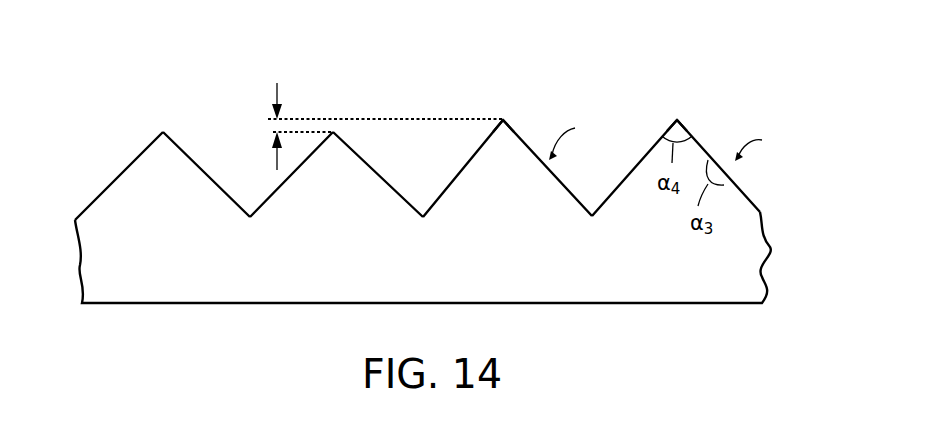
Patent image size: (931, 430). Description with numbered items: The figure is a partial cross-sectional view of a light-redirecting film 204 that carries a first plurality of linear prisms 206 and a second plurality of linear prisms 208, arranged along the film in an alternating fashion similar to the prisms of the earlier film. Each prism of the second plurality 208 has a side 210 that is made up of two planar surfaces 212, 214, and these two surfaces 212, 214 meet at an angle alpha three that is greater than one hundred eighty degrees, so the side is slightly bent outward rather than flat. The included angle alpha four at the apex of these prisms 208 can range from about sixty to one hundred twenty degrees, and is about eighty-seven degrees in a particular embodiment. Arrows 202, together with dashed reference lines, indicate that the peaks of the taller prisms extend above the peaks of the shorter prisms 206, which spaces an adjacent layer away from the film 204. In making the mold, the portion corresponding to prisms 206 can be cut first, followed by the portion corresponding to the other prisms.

The arrows 202 is at (277, 84).
The film 204 is at (190, 107).
The first plurality of linear prisms 206 is at (120, 175).
The second plurality of linear prisms 208 is at (462, 170).
The side 210 is at (678, 133).
The planar surface 212 is at (515, 133).
The planar surface 214 is at (574, 199).